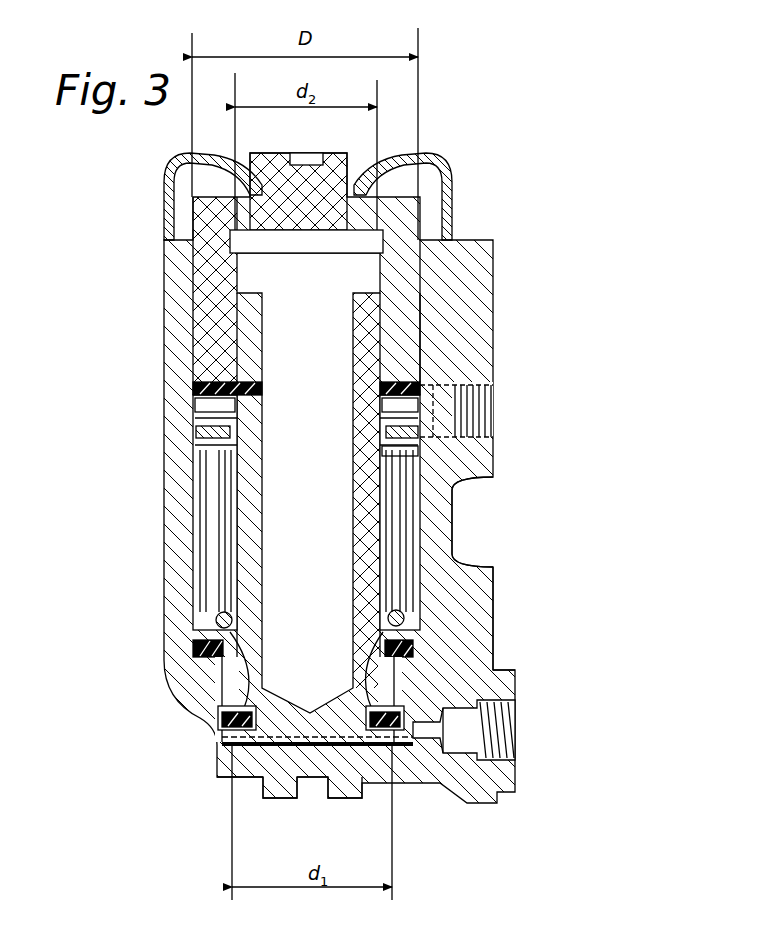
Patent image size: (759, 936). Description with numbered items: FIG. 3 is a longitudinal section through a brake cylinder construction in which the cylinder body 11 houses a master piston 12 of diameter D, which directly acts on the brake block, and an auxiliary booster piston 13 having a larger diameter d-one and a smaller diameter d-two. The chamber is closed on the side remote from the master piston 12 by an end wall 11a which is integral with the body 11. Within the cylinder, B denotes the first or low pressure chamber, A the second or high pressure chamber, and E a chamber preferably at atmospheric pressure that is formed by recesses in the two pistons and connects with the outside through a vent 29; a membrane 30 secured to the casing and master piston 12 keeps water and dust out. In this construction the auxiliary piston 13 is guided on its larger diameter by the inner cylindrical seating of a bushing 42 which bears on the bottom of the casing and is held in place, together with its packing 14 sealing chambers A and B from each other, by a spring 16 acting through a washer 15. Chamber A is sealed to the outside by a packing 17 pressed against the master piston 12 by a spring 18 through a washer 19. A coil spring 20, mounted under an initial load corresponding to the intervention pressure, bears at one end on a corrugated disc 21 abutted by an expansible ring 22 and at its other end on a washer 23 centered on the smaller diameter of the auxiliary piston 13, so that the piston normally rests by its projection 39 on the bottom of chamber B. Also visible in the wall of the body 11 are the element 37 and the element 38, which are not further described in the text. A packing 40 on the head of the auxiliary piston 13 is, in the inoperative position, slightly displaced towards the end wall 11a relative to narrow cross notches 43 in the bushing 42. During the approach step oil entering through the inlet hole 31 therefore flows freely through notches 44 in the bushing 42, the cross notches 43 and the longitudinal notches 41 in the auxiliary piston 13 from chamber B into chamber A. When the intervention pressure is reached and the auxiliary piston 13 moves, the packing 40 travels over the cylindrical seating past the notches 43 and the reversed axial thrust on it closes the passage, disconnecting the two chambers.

The cylinder body 11 is at (470, 272).
The end wall 11a is at (245, 785).
The master piston 12 is at (408, 303).
The auxiliary booster piston 13 is at (243, 314).
The packing 14 is at (210, 648).
The washer 15 is at (220, 612).
The spring 16 is at (413, 583).
The packing 17 is at (412, 370).
The spring 18 is at (200, 411).
The washer 19 is at (422, 400).
The coil spring 20 is at (215, 486).
The corrugated disc 21 is at (205, 443).
The expansible ring 22 is at (200, 432).
The washer 23 is at (402, 614).
The vent 29 is at (178, 178).
The membrane 30 is at (447, 172).
The inlet hole 31 is at (485, 742).
The seal ring 37 is at (405, 455).
The threaded bore 38 is at (470, 420).
The projection 39 is at (310, 790).
The packing 40 is at (225, 745).
The longitudinal notches 41 is at (405, 672).
The bushing 42 is at (218, 670).
The cross notches 43 is at (418, 760).
The notches 44 is at (393, 760).
The high pressure chamber A is at (408, 520).
The low pressure chamber B is at (383, 785).
The atmospheric chamber E is at (300, 512).